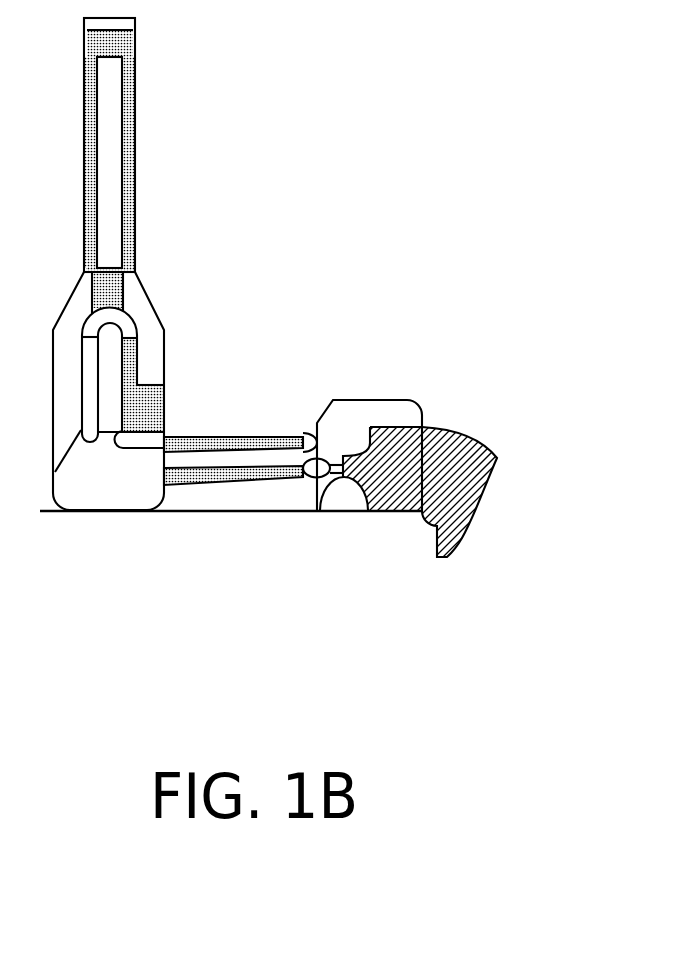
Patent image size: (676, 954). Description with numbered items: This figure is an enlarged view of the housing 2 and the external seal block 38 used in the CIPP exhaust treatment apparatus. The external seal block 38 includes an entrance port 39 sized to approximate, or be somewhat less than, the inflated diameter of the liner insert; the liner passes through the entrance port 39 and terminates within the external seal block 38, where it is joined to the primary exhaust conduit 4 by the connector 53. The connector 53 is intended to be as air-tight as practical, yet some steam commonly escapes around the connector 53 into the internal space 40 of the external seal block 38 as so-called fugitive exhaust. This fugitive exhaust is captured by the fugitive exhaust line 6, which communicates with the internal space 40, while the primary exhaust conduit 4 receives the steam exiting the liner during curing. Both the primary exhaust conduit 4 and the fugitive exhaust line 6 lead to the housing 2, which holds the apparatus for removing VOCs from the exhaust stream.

The housing 2 is at (151, 260).
The primary exhaust conduit 4 is at (243, 479).
The fugitive exhaust line 6 is at (212, 437).
The external seal block 38 is at (350, 400).
The internal space 40 is at (372, 421).
The entrance port 39 is at (427, 427).
The connector 53 is at (320, 511).